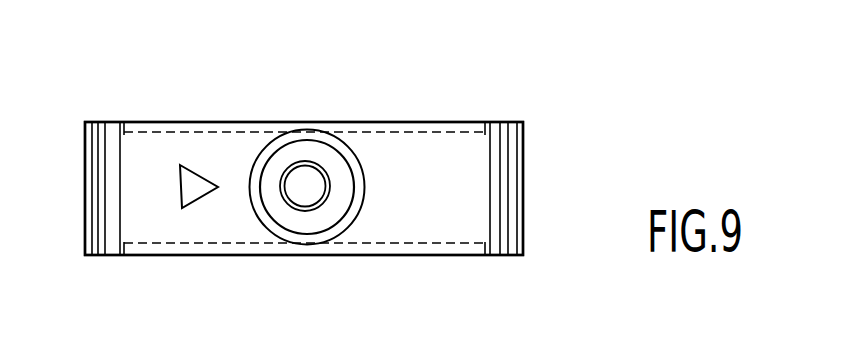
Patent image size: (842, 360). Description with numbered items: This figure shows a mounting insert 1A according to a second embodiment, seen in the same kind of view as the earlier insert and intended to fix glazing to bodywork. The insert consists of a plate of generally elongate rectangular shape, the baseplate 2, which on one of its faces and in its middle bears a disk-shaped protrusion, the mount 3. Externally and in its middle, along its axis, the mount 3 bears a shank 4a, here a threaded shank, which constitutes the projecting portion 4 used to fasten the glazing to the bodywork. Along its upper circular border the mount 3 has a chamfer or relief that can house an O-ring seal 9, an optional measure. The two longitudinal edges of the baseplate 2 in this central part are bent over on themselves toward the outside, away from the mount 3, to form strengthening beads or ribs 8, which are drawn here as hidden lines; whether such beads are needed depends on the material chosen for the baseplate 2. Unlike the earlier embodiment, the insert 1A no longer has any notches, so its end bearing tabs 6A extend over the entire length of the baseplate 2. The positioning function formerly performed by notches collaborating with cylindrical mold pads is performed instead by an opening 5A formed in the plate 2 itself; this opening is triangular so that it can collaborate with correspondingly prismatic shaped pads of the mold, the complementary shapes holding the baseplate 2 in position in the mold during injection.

The mounting insert 1A is at (378, 104).
The baseplate 2 is at (442, 207).
The mount 3 is at (288, 152).
The projecting portion 4 is at (310, 188).
The shank 4a is at (306, 166).
The opening 5A is at (197, 200).
The end bearing tabs 6A is at (500, 123).
The strengthening beads or ribs 8 is at (380, 244).
The O-ring seal 9 is at (337, 143).